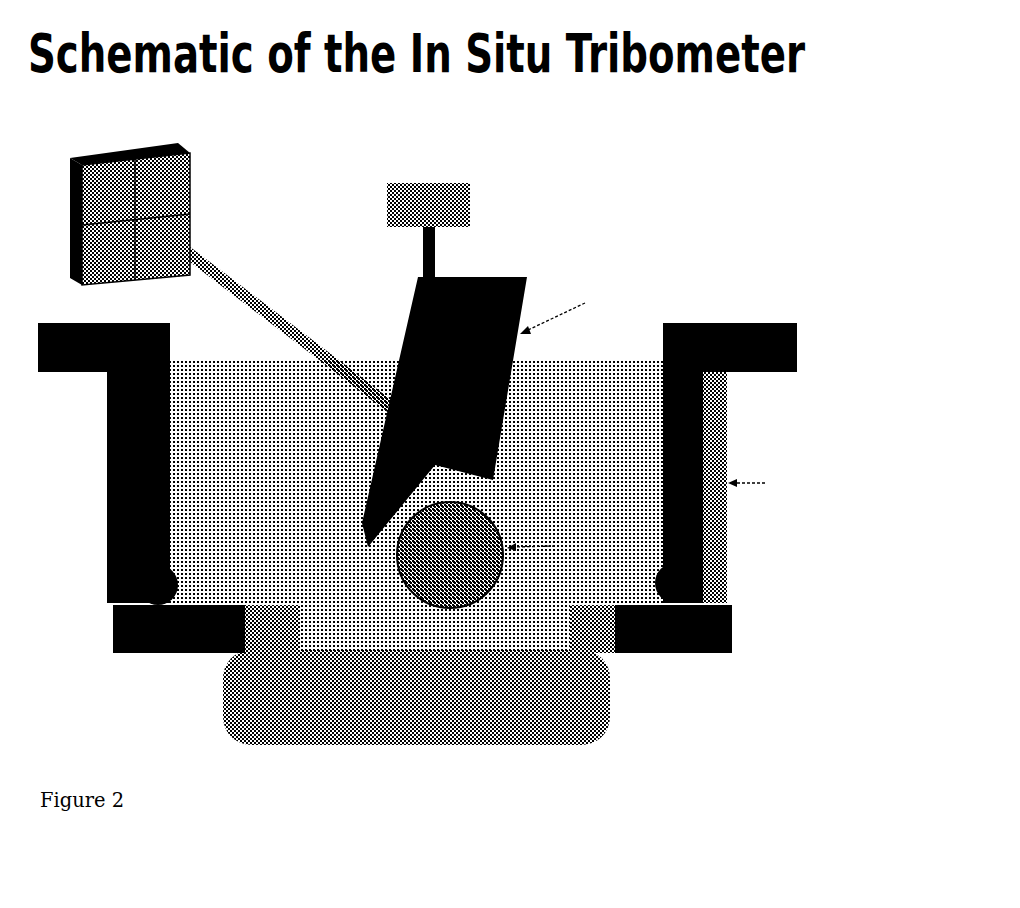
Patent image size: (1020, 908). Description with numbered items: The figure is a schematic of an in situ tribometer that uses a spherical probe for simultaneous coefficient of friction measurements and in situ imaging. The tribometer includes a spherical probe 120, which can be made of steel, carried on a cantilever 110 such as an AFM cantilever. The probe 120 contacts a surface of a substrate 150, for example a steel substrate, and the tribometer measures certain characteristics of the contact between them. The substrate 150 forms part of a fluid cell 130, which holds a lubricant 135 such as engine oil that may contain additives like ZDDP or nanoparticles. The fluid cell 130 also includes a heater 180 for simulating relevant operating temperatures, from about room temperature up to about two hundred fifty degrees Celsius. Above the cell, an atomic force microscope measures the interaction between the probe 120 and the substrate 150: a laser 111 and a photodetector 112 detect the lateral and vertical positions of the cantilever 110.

The cantilever 110 is at (480, 290).
The laser 111 is at (420, 195).
The photodetector 112 is at (190, 183).
The spherical probe 120 is at (460, 542).
The fluid cell 130 is at (752, 333).
The lubricant 135 is at (653, 470).
The substrate 150 is at (623, 630).
The heater 180 is at (538, 723).